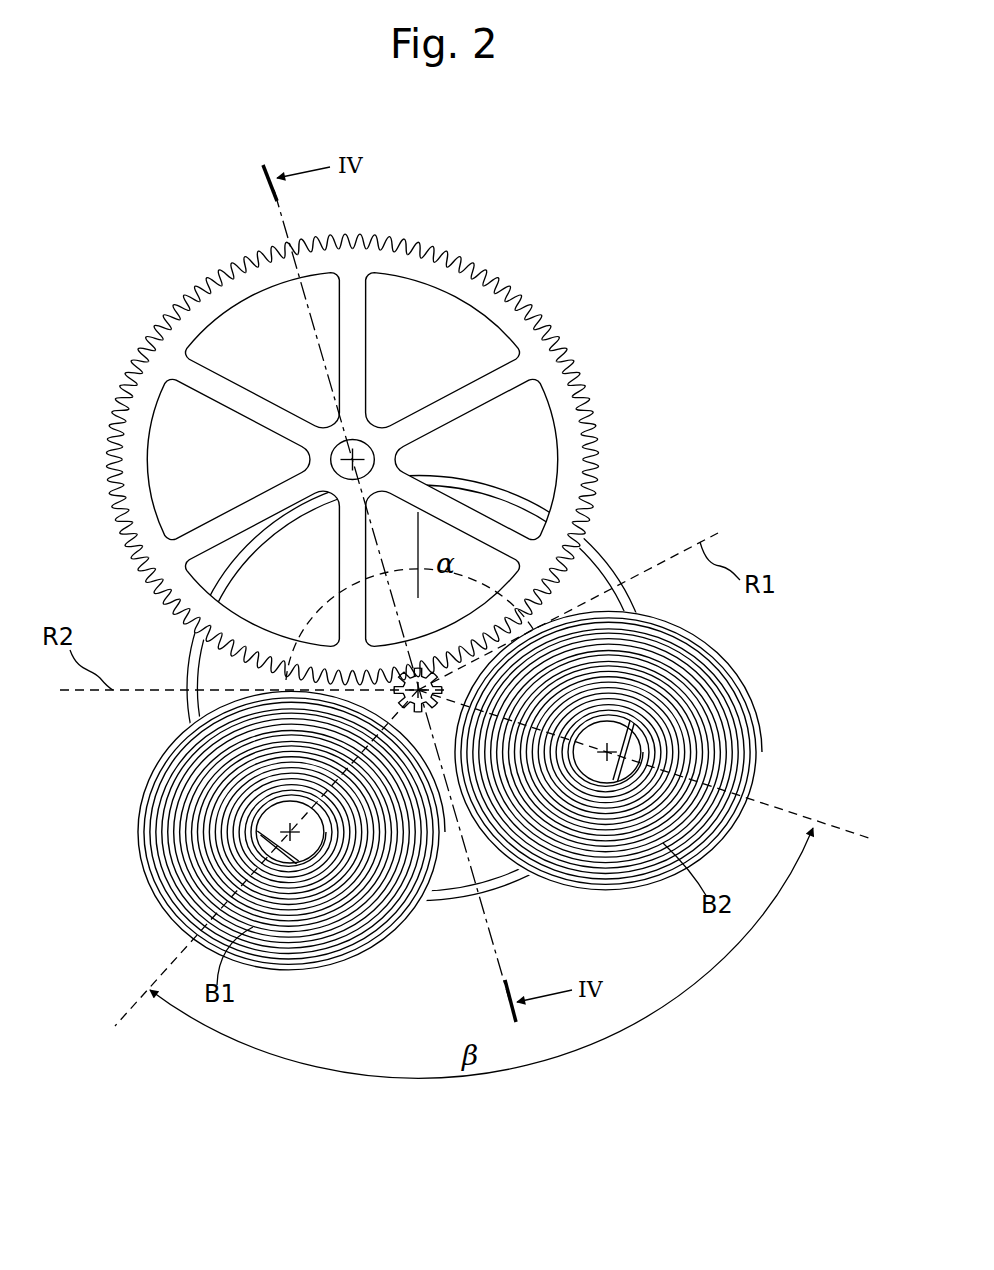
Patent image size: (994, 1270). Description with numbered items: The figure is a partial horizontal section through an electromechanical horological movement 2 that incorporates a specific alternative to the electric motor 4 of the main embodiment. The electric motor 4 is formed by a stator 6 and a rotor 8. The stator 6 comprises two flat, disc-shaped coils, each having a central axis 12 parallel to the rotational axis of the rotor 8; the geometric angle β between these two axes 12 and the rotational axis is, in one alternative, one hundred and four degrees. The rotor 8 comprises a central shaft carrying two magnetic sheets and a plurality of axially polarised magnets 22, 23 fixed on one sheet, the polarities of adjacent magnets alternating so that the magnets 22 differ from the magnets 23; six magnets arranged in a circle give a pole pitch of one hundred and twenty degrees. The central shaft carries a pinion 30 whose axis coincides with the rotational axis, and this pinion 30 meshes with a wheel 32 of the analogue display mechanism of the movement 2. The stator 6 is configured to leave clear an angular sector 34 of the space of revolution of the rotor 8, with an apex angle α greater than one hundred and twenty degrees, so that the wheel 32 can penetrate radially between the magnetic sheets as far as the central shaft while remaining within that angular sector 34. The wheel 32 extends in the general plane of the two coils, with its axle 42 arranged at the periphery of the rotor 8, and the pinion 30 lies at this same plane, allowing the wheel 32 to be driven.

The horological movement 2 is at (672, 272).
The electric motor 4 is at (100, 757).
The stator 6 is at (550, 895).
The rotor 8 is at (180, 656).
The central axis 12 is at (258, 833).
The magnets 22 is at (613, 563).
The magnets 23 is at (292, 549).
The pinion 30 is at (406, 718).
The wheel 32 is at (419, 268).
The angular sector 34 is at (632, 498).
The axle 42 is at (350, 458).